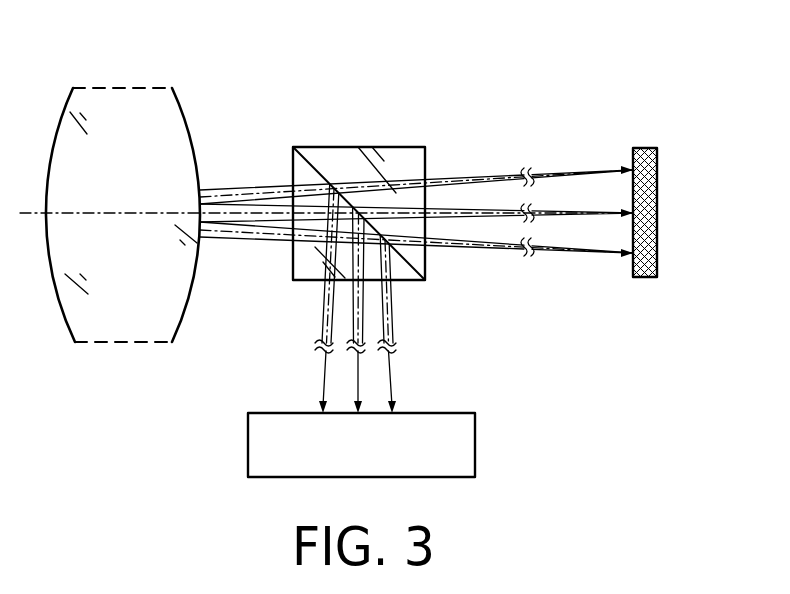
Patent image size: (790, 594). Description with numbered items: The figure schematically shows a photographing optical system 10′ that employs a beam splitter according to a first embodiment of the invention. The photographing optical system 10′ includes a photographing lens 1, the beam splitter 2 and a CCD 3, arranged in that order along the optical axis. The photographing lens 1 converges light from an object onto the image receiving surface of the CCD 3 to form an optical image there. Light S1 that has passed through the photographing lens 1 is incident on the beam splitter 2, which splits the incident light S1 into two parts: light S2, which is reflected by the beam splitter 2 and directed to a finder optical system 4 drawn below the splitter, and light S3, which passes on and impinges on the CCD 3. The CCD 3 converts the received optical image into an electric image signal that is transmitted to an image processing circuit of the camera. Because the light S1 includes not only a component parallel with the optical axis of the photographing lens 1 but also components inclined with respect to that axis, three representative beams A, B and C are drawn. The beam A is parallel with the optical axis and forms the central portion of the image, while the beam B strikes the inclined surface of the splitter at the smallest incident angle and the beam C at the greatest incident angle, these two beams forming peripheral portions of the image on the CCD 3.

The photographing lens 1 is at (128, 97).
The beam splitter 2 is at (405, 157).
The CCD 3 is at (640, 148).
The finder optical system 4 is at (475, 445).
The photographing optical system 10′ is at (458, 54).
The light S1 is at (232, 174).
The light reflected by the beam splitter S2 is at (372, 298).
The light impinging on the CCD S3 is at (559, 224).
The beam A is at (317, 237).
The beam B is at (270, 188).
The beam C is at (277, 243).